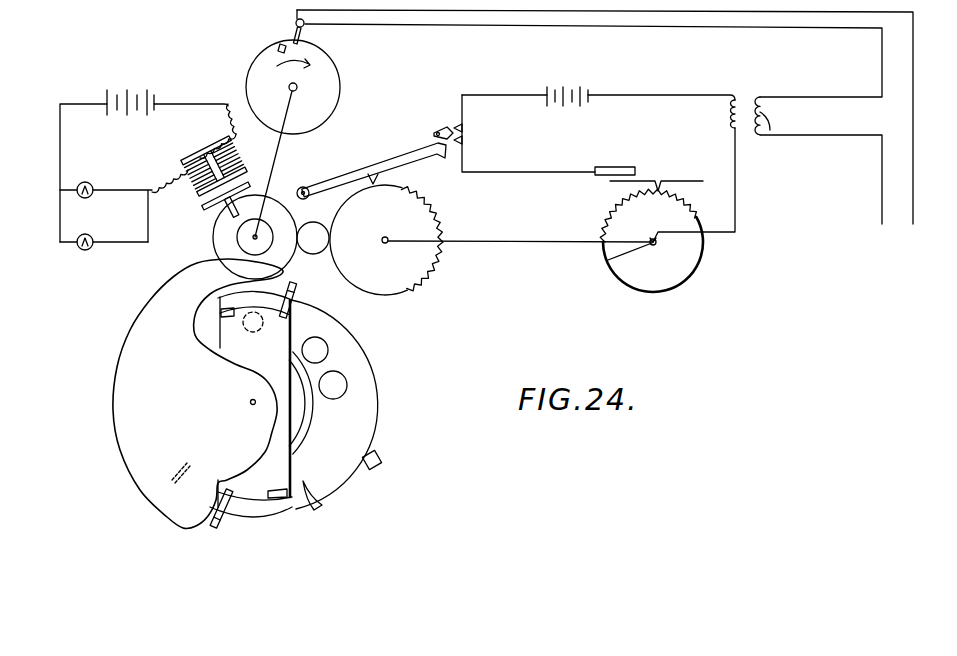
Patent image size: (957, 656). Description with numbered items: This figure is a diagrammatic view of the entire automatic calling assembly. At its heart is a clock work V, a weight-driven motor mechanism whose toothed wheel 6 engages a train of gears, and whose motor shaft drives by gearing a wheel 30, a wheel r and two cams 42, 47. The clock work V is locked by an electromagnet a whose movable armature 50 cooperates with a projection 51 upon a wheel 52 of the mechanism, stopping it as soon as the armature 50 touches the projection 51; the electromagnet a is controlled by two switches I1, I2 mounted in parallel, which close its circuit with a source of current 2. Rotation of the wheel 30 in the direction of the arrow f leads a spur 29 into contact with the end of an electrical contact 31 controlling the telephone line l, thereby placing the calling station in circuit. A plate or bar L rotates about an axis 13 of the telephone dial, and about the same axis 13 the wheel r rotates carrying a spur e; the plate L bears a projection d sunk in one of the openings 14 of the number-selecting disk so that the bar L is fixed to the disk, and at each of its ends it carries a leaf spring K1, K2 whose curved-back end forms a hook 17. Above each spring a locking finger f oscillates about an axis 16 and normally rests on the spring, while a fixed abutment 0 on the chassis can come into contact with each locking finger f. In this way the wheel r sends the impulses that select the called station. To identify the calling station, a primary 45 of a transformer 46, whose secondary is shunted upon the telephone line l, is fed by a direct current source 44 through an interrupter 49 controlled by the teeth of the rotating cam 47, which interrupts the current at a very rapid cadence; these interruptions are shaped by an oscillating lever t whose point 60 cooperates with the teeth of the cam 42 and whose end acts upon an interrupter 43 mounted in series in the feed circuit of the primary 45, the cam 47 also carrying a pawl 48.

The source of current 2 is at (106, 100).
The spur 29 is at (282, 46).
The wheel 30 is at (322, 118).
The electrical contact 31 is at (307, 27).
The cam 42 is at (417, 266).
The interrupter 43 is at (460, 125).
The direct current source 44 is at (565, 106).
The primary 45 is at (729, 116).
The transformer 46 is at (750, 100).
The cam 47 is at (688, 268).
The pawl 48 is at (607, 260).
The interrupter 49 is at (637, 180).
The movable armature 50 is at (770, 131).
The projection 51 is at (253, 194).
The wheel 52 is at (223, 242).
The point 60 is at (374, 186).
The toothed wheel 6 is at (347, 418).
The axis 13 is at (251, 404).
The openings 14 is at (329, 355).
The axis 16 is at (293, 301).
The hook 17 is at (266, 322).
The fixed abutment 0 is at (376, 458).
The telephone line l is at (400, 20).
The oscillating lever t is at (358, 175).
The electromagnet a is at (191, 150).
The clock work V is at (277, 211).
The plate L is at (281, 398).
The leaf spring K1 is at (260, 501).
The leaf spring K2 is at (255, 321).
The projection d is at (253, 333).
The wheel r is at (135, 468).
The spur e is at (172, 481).
The locking finger f is at (296, 283).
The switch I1 is at (77, 190).
The switch I2 is at (76, 241).